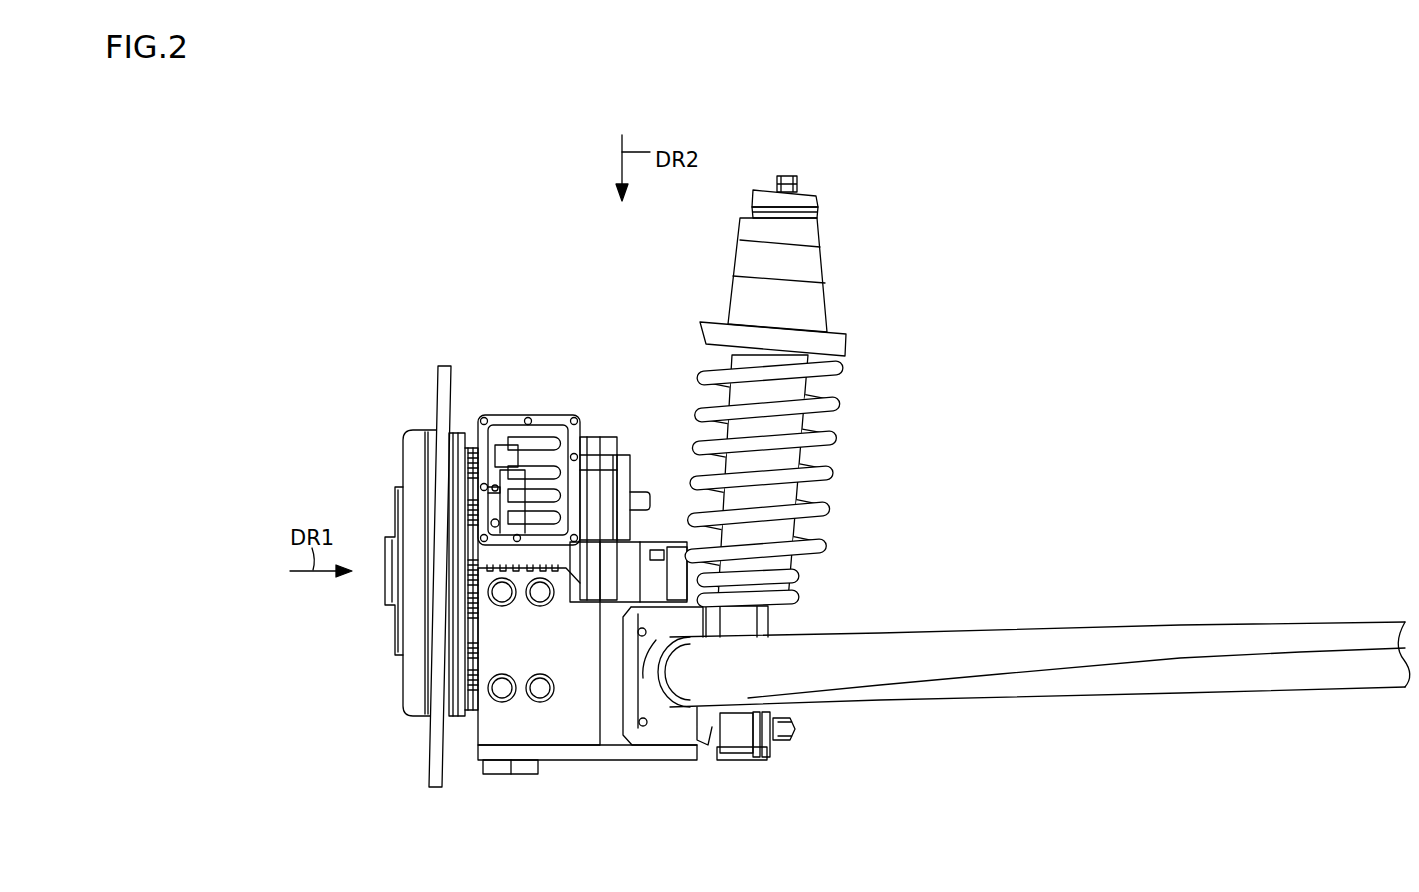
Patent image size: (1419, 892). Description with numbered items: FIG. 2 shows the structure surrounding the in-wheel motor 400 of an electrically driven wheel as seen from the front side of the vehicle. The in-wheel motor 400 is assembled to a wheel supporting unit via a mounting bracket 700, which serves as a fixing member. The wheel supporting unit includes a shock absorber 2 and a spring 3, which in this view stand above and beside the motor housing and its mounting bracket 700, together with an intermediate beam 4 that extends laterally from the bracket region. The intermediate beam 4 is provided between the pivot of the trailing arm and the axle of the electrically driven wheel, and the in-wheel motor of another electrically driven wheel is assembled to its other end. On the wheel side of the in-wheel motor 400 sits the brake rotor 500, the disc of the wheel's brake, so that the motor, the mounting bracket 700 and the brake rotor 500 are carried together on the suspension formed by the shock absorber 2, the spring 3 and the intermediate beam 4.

The shock absorber 2 is at (784, 429).
The spring 3 is at (814, 478).
The intermediate beam 4 is at (1211, 678).
The in-wheel motor 400 is at (549, 415).
The brake rotor 500 is at (446, 390).
The mounting bracket 700 is at (562, 724).